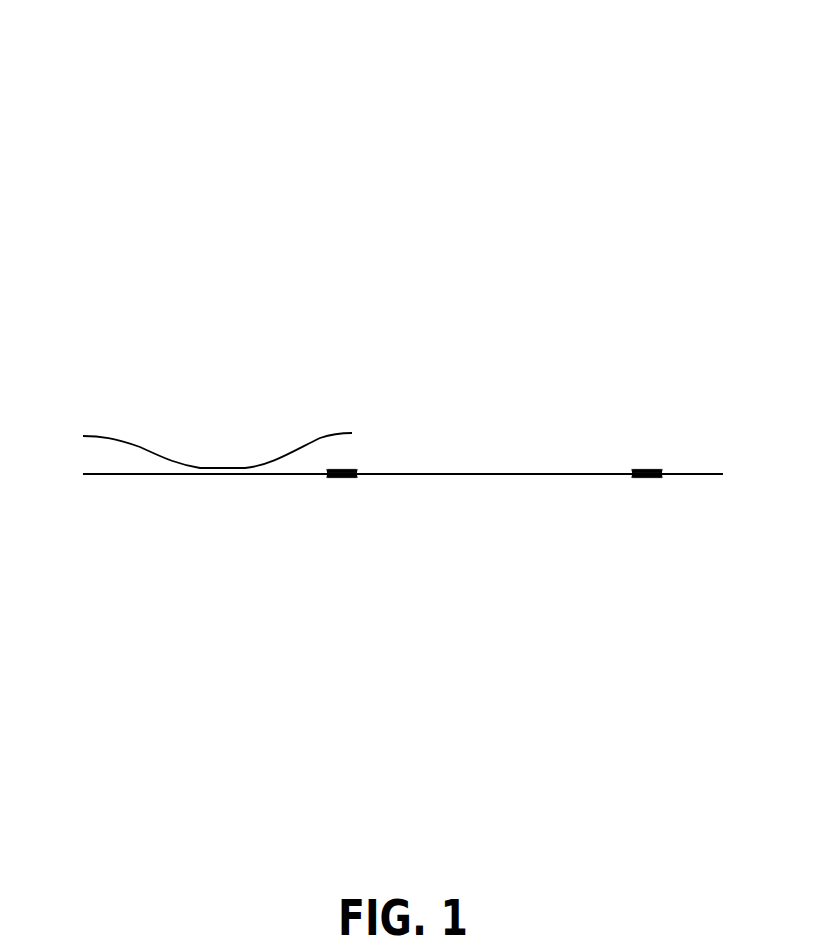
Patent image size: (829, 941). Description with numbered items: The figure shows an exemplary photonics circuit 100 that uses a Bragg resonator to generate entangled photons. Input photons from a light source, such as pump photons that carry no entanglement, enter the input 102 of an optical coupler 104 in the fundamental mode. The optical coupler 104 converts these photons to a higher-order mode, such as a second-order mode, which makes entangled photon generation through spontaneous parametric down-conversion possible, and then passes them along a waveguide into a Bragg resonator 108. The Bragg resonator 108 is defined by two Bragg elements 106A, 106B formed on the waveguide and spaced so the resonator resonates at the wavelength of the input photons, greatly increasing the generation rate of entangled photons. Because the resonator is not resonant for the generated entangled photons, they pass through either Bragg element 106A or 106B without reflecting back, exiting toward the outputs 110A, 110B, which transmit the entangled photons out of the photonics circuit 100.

The photonics circuit 100 is at (81, 131).
The input 102 is at (83, 436).
The optical coupler 104 is at (233, 468).
The Bragg element 106A is at (347, 480).
The Bragg element 106B is at (643, 468).
The Bragg resonator 108 is at (490, 475).
The output 110A is at (107, 477).
The output 110B is at (720, 478).